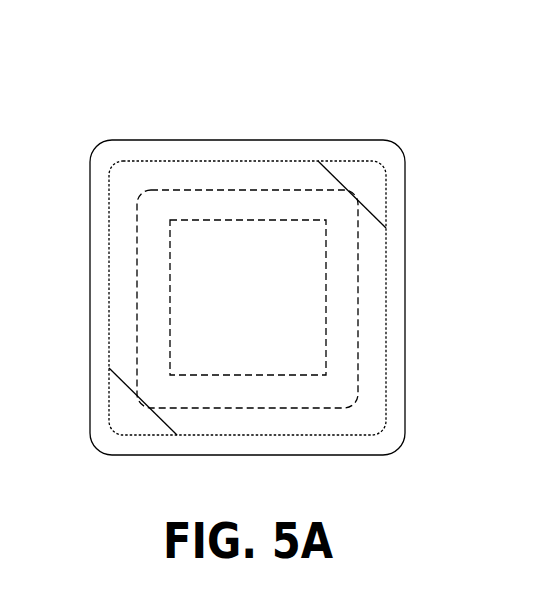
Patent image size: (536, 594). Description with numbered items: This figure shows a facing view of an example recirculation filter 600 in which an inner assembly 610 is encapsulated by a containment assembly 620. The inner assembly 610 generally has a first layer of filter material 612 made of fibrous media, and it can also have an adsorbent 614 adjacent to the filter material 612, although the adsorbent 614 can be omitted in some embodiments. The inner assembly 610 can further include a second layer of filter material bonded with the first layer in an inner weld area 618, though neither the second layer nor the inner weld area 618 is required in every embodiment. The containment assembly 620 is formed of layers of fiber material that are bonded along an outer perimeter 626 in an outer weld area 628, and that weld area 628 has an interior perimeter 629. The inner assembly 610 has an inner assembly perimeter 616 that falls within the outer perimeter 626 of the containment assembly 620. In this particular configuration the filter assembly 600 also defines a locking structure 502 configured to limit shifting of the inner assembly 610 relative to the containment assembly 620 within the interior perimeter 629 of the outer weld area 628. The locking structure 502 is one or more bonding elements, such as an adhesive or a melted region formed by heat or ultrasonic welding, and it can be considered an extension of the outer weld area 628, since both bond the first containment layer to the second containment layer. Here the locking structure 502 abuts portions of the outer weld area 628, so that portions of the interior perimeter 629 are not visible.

The recirculation filter 600 is at (188, 55).
The locking structure 502 is at (375, 183).
The inner assembly 610 is at (272, 410).
The first layer of filter material 612 is at (302, 202).
The adsorbent 614 is at (232, 360).
The inner assembly perimeter 616 is at (215, 190).
The inner weld area 618 is at (187, 200).
The containment assembly 620 is at (407, 352).
The outer perimeter 626 is at (407, 378).
The outer weld area 628 is at (377, 442).
The interior perimeter 629 is at (113, 300).